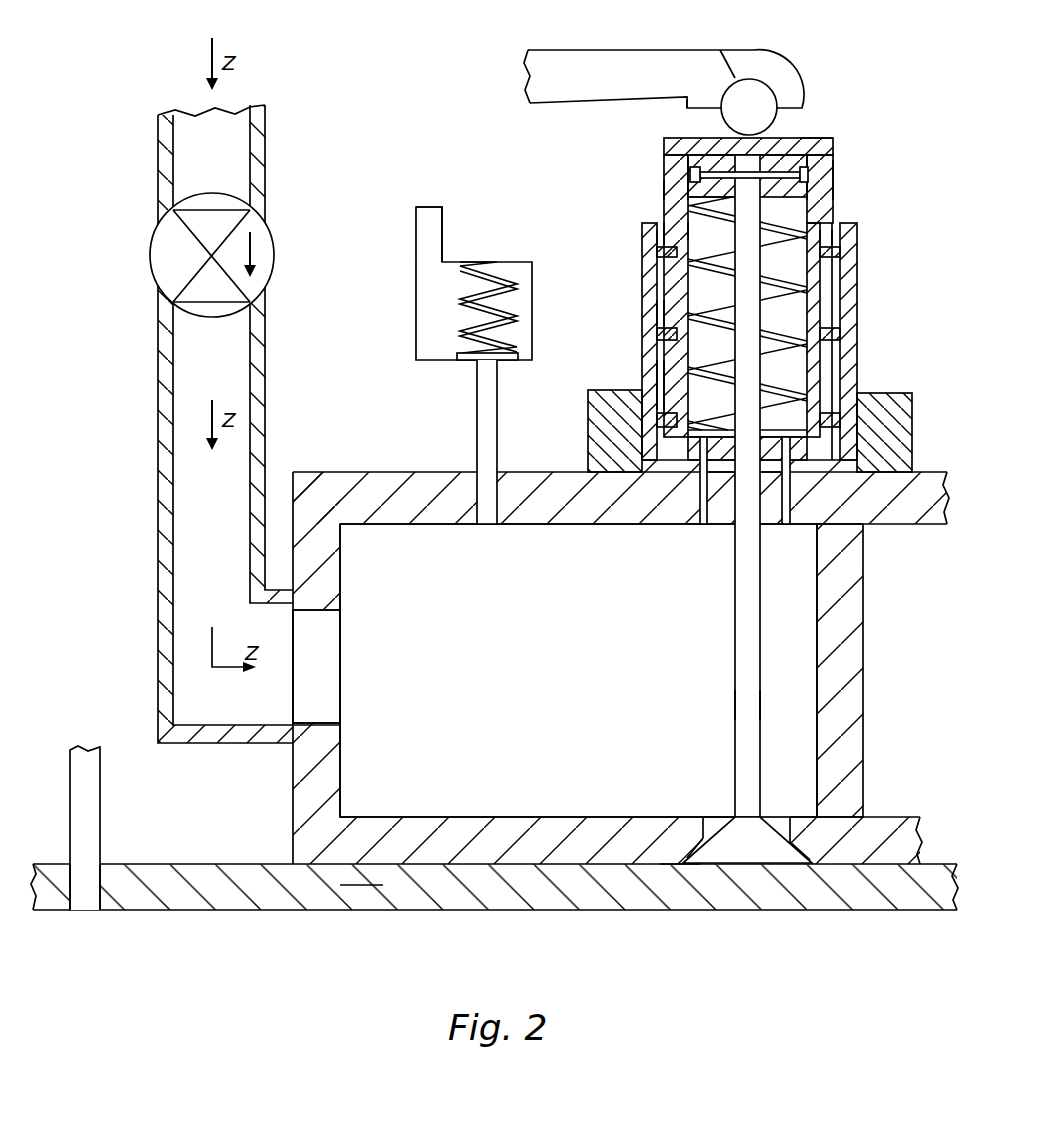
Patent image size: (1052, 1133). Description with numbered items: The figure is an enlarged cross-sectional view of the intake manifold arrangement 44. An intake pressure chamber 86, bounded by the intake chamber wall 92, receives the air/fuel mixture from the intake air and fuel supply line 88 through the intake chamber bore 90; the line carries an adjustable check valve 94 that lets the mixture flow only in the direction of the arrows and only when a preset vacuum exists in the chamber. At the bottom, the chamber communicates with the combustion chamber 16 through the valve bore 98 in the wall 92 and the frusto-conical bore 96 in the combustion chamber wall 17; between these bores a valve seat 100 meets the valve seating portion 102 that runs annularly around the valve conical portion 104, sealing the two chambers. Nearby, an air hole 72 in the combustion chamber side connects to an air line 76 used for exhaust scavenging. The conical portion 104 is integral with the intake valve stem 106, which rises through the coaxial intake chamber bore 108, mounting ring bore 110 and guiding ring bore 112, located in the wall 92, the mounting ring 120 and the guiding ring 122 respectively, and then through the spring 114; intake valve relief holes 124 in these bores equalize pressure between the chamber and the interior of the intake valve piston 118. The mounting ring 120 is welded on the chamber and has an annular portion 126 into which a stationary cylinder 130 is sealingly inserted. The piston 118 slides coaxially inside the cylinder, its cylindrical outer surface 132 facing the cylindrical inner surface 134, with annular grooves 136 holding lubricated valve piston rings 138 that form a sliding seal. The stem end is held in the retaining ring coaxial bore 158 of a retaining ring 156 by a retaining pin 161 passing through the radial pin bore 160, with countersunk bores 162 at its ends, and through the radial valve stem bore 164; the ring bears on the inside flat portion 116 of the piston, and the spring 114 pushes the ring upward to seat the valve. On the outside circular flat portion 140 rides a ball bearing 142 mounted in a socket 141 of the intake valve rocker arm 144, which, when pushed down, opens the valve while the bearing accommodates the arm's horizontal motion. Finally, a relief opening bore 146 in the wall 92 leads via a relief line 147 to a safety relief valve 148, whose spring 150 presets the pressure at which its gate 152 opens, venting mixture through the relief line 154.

The combustion chamber 16 is at (228, 910).
The combustion chamber wall 17 is at (356, 890).
The intake manifold arrangement 44 is at (414, 124).
The air hole 72 is at (90, 892).
The air line 76 is at (100, 796).
The intake pressure chamber 86 is at (462, 659).
The intake air and fuel supply line 88 is at (265, 402).
The intake chamber bore 90 is at (323, 612).
The intake chamber wall 92 is at (330, 548).
The adjustable check valve 94 is at (273, 237).
The frusto-conical bore 96 is at (675, 890).
The valve bore 98 is at (718, 817).
The valve seat 100 is at (697, 860).
The valve seating portion 102 is at (807, 855).
The valve conical portion 104 is at (727, 855).
The intake valve stem 106 is at (735, 698).
The intake chamber bore 108 is at (757, 526).
The mounting ring bore 110 is at (735, 490).
The guiding ring bore 112 is at (750, 445).
The spring 114 is at (775, 207).
The inside flat portion 116 is at (832, 148).
The intake valve piston 118 is at (835, 165).
The mounting ring 120 is at (657, 463).
The guiding ring 122 is at (717, 455).
The intake valve relief holes 124 is at (700, 514).
The annular portion 126 is at (598, 432).
The stationary cylinder 130 is at (858, 292).
The cylindrical outer surface 132 is at (666, 193).
The cylindrical inner surface 134 is at (672, 232).
The annular grooves 136 is at (827, 226).
The valve piston rings 138 is at (660, 253).
The outside circular flat portion 140 is at (832, 138).
The socket 141 is at (723, 50).
The ball bearing 142 is at (750, 100).
The intake valve rocker arm 144 is at (592, 65).
The relief opening bore 146 is at (489, 524).
The relief line 147 is at (477, 426).
The safety relief valve 148 is at (416, 330).
The spring 150 is at (500, 280).
The gate 152 is at (468, 360).
The relief line 154 is at (416, 240).
The retaining ring 156 is at (710, 137).
The retaining ring coaxial bore 158 is at (808, 137).
The radial pin bore 160 is at (697, 176).
The retaining pin 161 is at (700, 213).
The countersunk bores 162 is at (698, 176).
The radial valve stem bore 164 is at (700, 105).